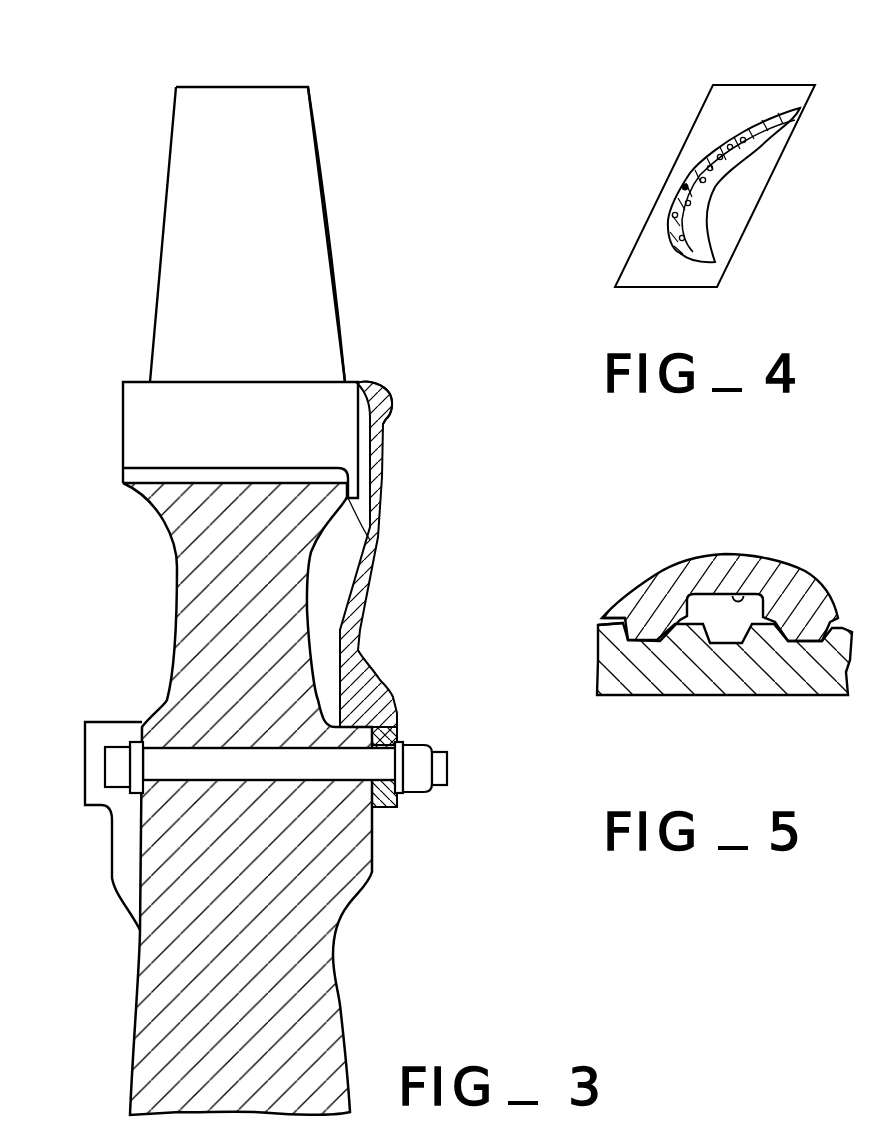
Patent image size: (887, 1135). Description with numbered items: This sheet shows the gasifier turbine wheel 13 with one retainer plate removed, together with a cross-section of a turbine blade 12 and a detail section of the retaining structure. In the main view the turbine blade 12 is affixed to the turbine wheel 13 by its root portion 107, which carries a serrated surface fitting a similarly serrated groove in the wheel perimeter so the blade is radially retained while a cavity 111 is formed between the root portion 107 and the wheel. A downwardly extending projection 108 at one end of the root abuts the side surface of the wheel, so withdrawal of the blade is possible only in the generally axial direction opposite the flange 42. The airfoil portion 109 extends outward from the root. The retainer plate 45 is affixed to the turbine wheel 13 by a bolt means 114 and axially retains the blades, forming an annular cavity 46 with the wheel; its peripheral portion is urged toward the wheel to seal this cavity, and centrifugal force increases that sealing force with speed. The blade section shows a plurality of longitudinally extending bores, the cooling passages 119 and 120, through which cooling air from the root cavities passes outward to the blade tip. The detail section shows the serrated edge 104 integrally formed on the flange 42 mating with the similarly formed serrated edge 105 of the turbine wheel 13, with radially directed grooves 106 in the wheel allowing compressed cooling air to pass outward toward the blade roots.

In FIG. 3, the turbine blade 12 is at (250, 249).
In FIG. 4, the turbine blade 12 is at (750, 123).
In FIG. 3, the turbine wheel 13 is at (256, 930).
In FIG. 5, the turbine wheel 13 is at (723, 572).
In FIG. 3, the airfoil portion 109 is at (335, 257).
In FIG. 3, the root portion 107 is at (123, 428).
In FIG. 3, the cavity 111 is at (175, 472).
In FIG. 3, the retainer plate 45 is at (383, 477).
In FIG. 3, the downwardly extending projection 108 is at (380, 547).
In FIG. 3, the annular cavity 46 is at (350, 588).
In FIG. 3, the serrated edge 105 is at (84, 762).
In FIG. 5, the serrated edge 105 is at (637, 620).
In FIG. 3, the bolt means 114 is at (455, 752).
In FIG. 4, the longitudinal cooling passages 120 is at (682, 236).
In FIG. 4, the longitudinal cooling passages 119 is at (683, 240).
In FIG. 5, the radially directed grooves 106 is at (747, 595).
In FIG. 5, the serrated edge 104 is at (598, 631).
In FIG. 5, the flange 42 is at (753, 677).